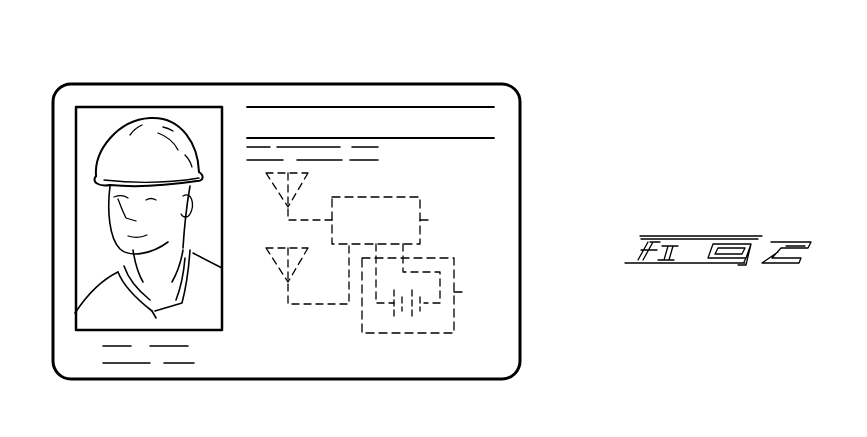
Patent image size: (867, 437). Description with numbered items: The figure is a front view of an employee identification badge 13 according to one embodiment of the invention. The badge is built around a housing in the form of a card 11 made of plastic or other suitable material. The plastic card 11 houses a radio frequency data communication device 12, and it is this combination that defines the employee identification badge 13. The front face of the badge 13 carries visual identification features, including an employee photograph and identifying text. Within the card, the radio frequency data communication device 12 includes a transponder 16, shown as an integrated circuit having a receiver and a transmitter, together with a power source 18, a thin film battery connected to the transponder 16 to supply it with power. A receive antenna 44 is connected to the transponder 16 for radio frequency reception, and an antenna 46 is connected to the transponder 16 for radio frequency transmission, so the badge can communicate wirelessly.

The card 11 is at (485, 331).
The employee identification badge 13 is at (486, 61).
The radio frequency data communication device 12 is at (487, 205).
The transponder 16 is at (428, 220).
The power source 18 is at (462, 292).
The receive antenna 44 is at (272, 178).
The antenna 46 is at (275, 262).